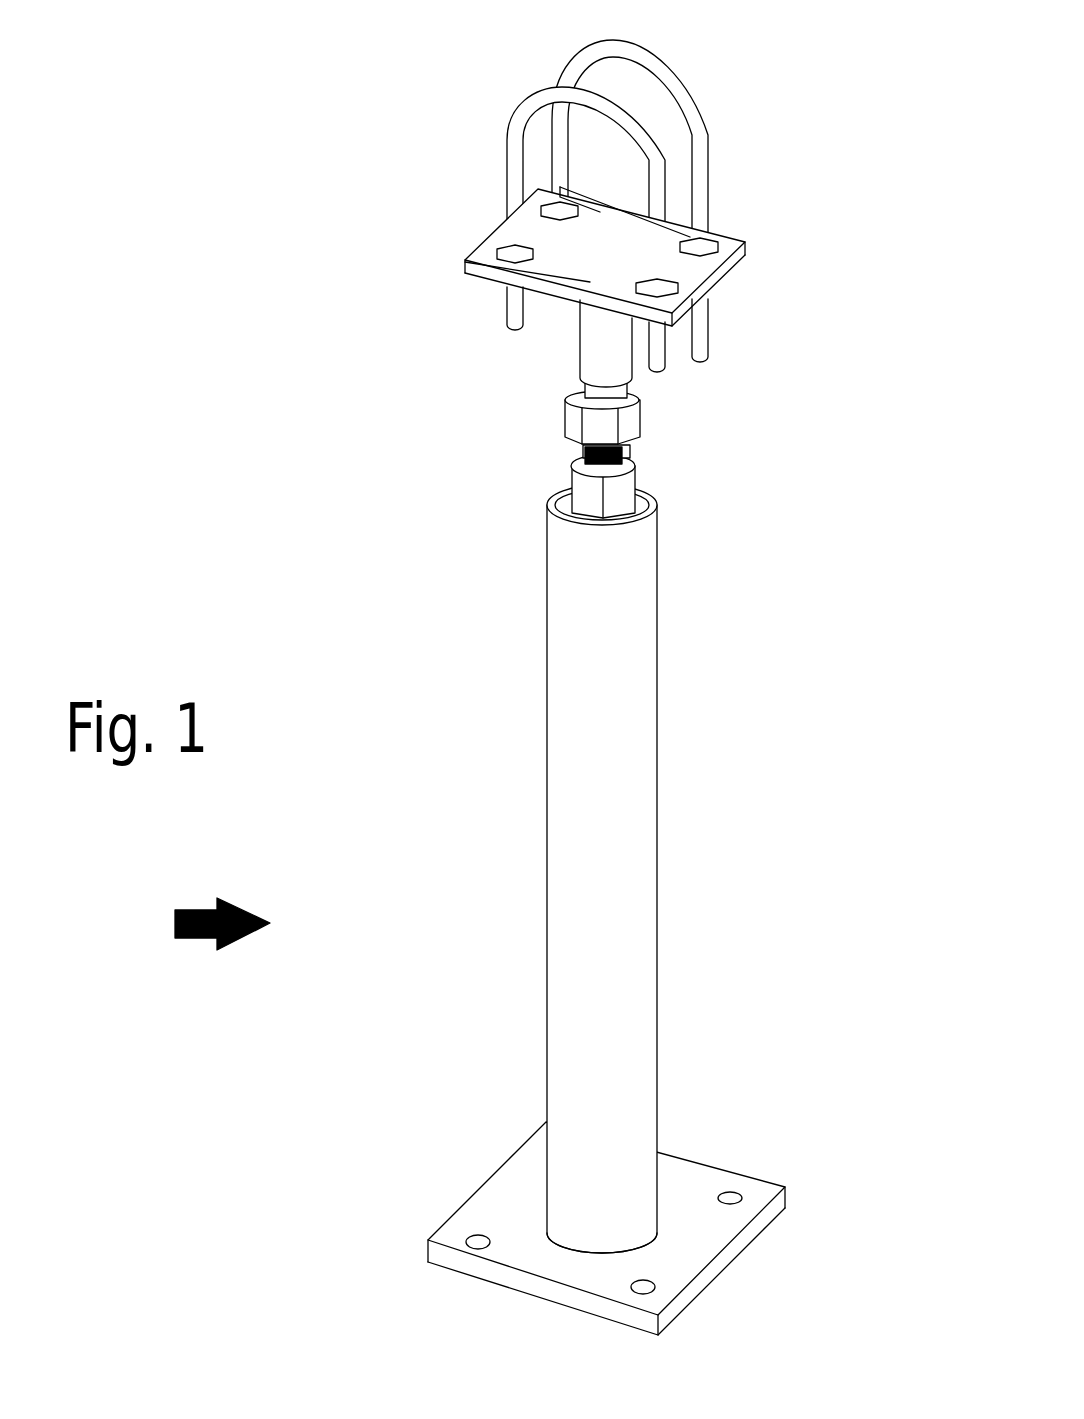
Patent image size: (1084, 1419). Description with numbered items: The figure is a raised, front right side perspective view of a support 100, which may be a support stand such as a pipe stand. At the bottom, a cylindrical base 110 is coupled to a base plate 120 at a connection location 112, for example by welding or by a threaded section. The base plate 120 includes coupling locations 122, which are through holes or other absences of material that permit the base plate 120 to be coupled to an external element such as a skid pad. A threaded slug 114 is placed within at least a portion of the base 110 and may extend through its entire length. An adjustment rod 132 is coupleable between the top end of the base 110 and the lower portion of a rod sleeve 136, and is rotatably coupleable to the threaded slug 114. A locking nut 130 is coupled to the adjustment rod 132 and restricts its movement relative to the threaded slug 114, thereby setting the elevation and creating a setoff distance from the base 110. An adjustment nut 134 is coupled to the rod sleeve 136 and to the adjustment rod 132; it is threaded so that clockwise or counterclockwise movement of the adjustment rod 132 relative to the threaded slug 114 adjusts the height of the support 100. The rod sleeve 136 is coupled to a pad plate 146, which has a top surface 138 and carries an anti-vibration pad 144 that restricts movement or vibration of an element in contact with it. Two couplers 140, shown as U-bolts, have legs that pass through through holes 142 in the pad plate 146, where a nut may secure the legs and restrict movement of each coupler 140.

The support 100 is at (185, 924).
The base 110 is at (737, 879).
The connection location 112 is at (595, 1248).
The threaded slug 114 is at (737, 543).
The base plate 120 is at (677, 1087).
The coupling location 122 is at (467, 1240).
The locking nut 130 is at (617, 496).
The adjustment rod 132 is at (755, 438).
The adjustment nut 134 is at (746, 391).
The rod sleeve 136 is at (753, 334).
The top surface 138 is at (696, 257).
The coupler 140 is at (717, 186).
The through hole 142 is at (675, 243).
The pad 144 is at (743, 187).
The pad plate 146 is at (590, 281).